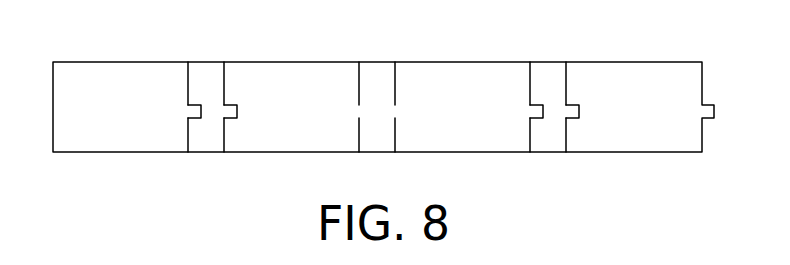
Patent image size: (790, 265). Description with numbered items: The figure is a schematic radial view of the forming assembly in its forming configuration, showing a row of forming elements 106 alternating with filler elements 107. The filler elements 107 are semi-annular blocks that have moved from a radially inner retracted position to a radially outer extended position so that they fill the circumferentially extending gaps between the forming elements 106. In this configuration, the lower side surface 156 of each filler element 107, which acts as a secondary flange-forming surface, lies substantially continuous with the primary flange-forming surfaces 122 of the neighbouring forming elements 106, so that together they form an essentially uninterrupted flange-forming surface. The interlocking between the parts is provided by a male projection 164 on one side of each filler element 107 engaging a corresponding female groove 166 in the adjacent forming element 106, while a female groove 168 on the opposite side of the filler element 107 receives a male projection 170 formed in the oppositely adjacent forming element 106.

The forming element 106 is at (122, 72).
The filler element 107 is at (205, 72).
The primary flange-forming surface 122 is at (637, 153).
The lower side surface 156 is at (550, 155).
The male projection 164 is at (237, 108).
The female groove 166 is at (579, 110).
The female groove 168 is at (530, 110).
The male projection 170 is at (188, 108).